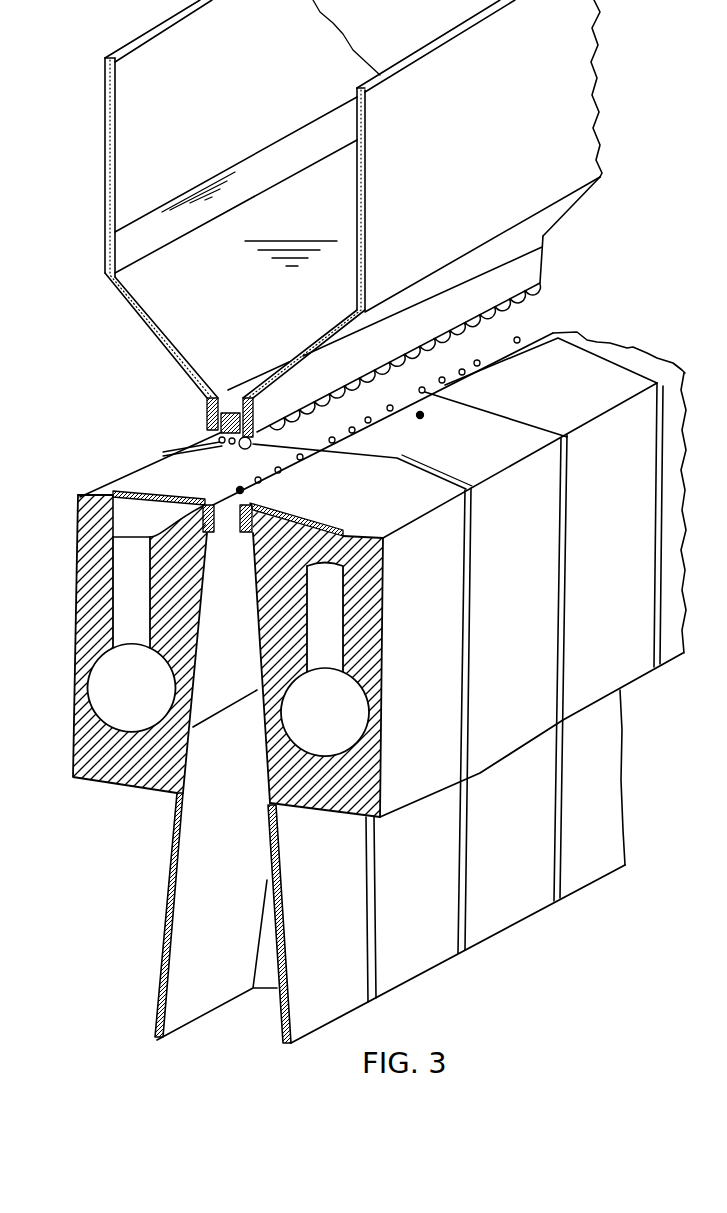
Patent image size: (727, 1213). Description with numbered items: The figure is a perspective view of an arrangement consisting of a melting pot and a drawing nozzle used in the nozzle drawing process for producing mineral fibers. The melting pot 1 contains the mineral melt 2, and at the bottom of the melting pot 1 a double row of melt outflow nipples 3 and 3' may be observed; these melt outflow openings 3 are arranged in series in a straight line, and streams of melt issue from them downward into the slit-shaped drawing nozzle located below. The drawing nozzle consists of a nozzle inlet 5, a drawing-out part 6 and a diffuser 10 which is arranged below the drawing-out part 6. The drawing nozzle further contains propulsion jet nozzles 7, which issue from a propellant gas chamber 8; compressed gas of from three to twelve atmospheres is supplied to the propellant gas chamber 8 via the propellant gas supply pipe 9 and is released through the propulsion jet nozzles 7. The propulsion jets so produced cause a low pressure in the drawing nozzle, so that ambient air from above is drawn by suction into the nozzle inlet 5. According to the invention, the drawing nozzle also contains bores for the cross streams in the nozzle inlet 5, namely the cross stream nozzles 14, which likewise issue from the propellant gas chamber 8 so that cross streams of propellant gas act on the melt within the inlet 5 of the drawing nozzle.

The melting pot 1 is at (563, 100).
The mineral melt 2 is at (177, 308).
The melt outflow opening 3 is at (207, 423).
The melt outflow nipple 3' is at (403, 334).
The inlet of the drawing nozzle 5 is at (227, 508).
The drawing-out part of the drawing nozzle 6 is at (236, 637).
The propulsion jet nozzle 7 is at (211, 538).
The propellant gas chamber 8 is at (138, 508).
The propellant gas supply pipe 9 is at (132, 613).
The diffuser 10 is at (203, 934).
The cross stream nozzle 14 is at (237, 487).